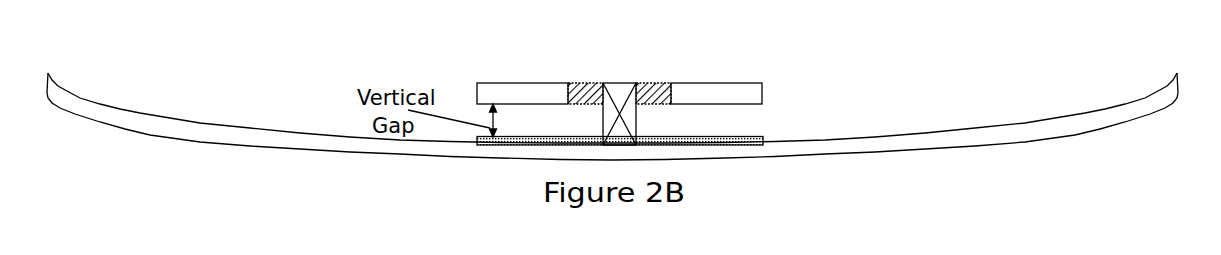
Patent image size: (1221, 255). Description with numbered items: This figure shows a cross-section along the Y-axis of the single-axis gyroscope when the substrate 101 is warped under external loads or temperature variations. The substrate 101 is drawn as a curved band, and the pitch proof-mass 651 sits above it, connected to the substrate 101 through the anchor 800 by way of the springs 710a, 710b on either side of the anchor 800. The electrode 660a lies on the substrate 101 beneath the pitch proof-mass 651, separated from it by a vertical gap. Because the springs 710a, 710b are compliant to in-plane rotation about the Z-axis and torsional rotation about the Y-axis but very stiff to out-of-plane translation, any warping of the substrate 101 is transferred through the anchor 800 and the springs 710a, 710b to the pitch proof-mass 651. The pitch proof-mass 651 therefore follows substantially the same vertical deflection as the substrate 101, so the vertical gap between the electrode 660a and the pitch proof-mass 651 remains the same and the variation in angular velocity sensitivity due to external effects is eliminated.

The substrate 101 is at (140, 113).
The pitch proof-mass 651 is at (500, 87).
The spring 710a is at (578, 85).
The spring 710b is at (649, 85).
The anchor 800 is at (620, 85).
The electrode 660a is at (765, 136).